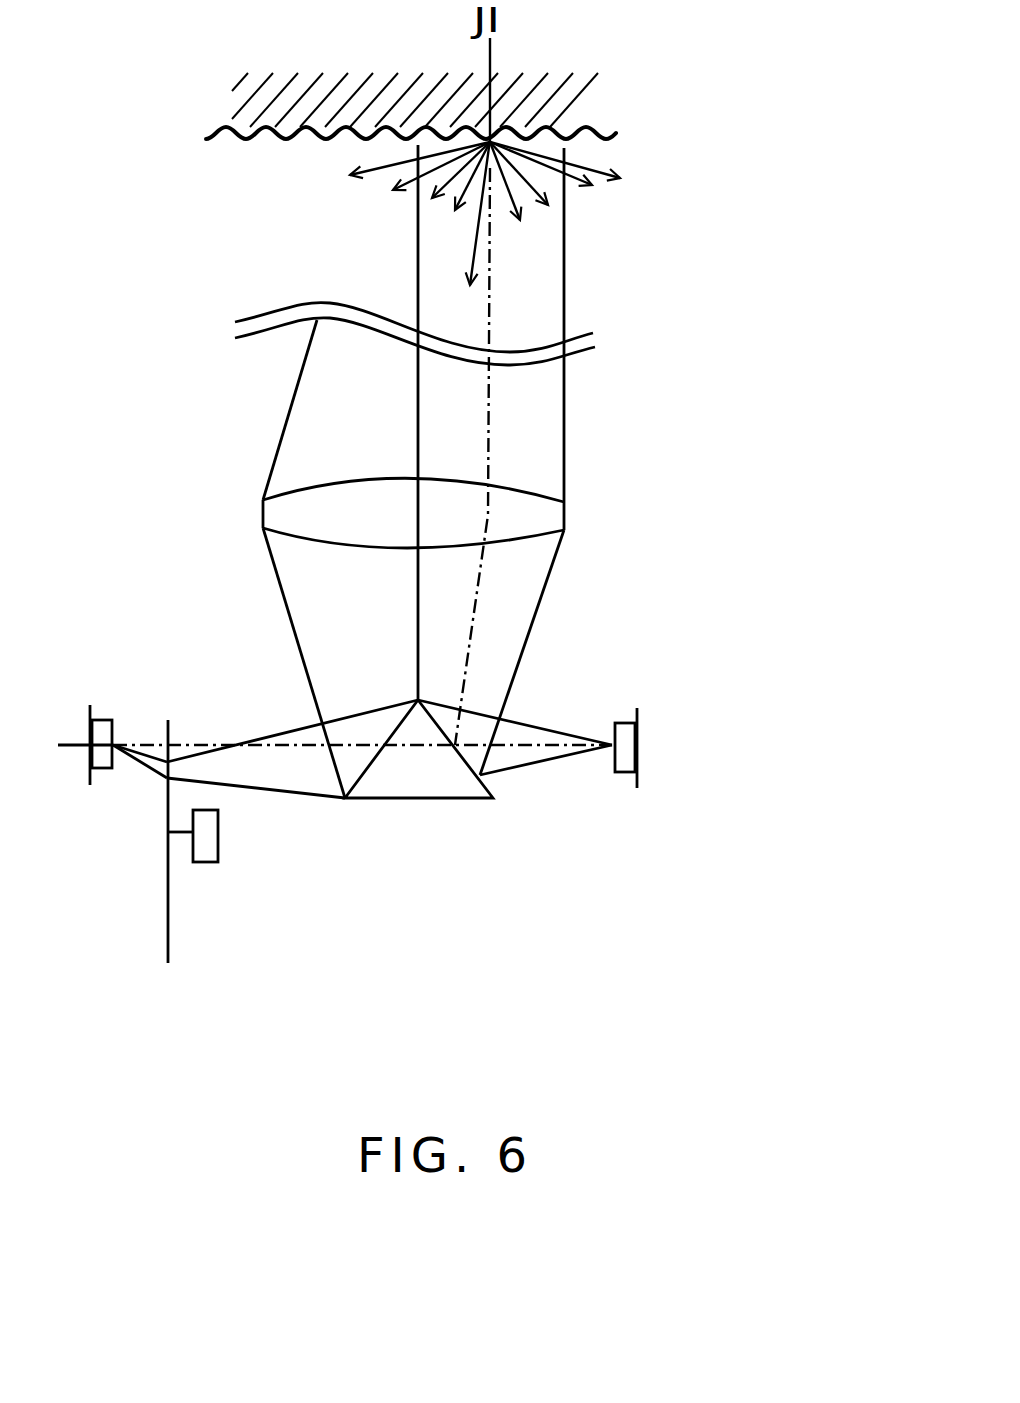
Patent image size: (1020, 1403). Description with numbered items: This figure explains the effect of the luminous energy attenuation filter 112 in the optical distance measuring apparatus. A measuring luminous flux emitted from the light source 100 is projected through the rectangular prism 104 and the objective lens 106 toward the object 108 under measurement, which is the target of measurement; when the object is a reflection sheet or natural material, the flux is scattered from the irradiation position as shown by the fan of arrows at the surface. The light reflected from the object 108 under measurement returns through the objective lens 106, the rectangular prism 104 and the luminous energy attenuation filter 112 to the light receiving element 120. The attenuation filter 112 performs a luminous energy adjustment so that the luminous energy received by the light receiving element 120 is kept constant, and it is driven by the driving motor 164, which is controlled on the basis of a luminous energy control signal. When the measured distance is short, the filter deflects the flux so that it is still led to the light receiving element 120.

The light source 100 is at (638, 758).
The rectangular prism 104 is at (433, 798).
The objective lens 106 is at (545, 520).
The object under measurement 108 is at (600, 95).
The luminous energy attenuation filter 112 is at (168, 938).
The light receiving element 120 is at (103, 730).
The driving motor 164 is at (205, 833).